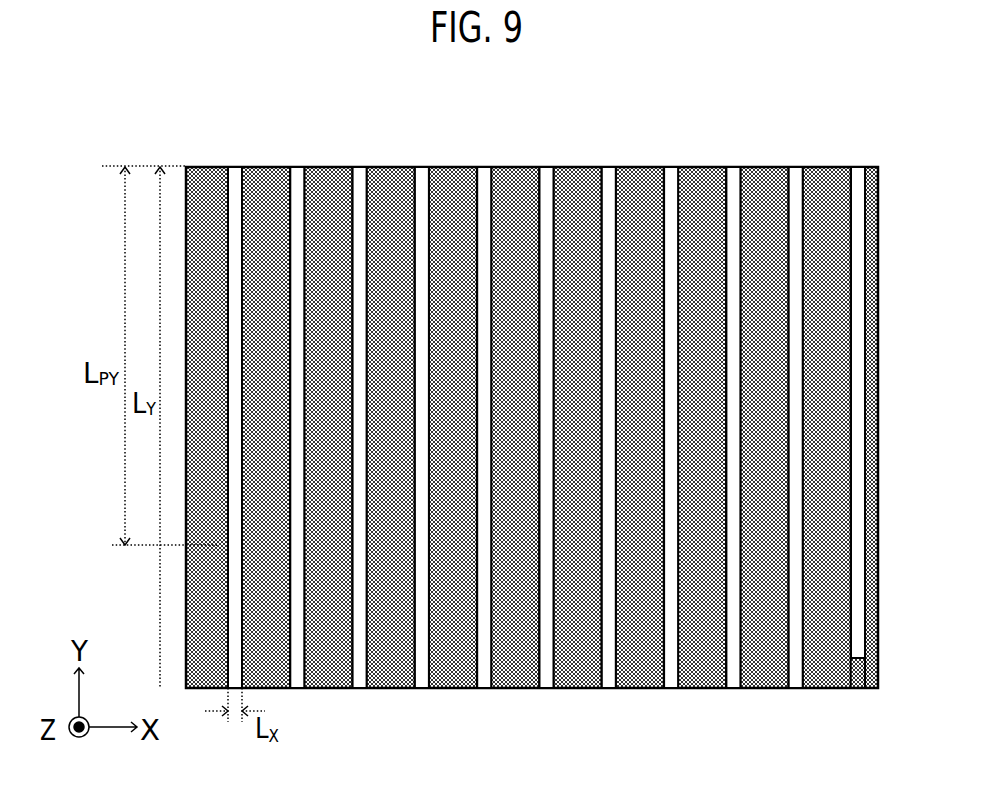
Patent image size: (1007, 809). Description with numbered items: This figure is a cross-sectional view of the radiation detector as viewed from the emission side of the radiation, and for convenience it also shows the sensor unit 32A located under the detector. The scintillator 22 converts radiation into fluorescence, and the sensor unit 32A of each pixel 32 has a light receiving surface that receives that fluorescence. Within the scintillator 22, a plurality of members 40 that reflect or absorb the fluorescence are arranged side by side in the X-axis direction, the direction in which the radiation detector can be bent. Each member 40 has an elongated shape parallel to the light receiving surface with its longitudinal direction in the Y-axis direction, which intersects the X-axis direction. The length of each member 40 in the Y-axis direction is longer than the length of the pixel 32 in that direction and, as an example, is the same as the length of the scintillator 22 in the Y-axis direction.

The scintillator 22 is at (850, 675).
The pixel 32 is at (753, 470).
The sensor unit 32A is at (320, 152).
The member 40 is at (858, 213).